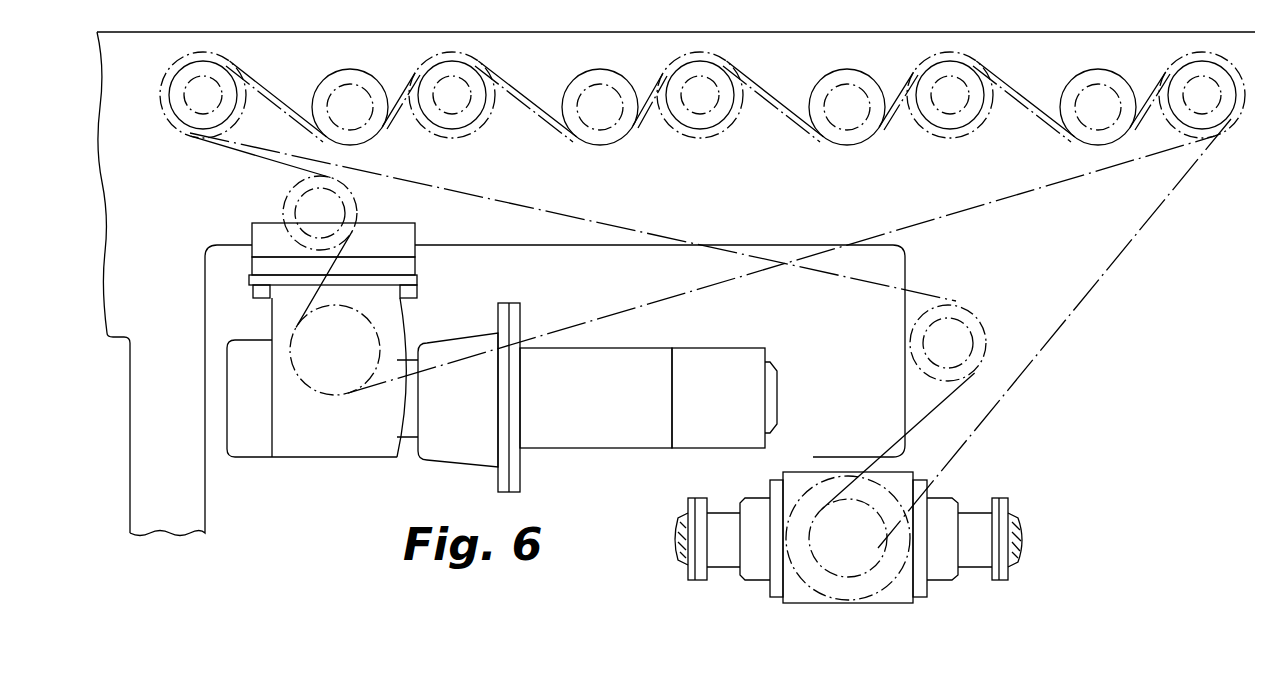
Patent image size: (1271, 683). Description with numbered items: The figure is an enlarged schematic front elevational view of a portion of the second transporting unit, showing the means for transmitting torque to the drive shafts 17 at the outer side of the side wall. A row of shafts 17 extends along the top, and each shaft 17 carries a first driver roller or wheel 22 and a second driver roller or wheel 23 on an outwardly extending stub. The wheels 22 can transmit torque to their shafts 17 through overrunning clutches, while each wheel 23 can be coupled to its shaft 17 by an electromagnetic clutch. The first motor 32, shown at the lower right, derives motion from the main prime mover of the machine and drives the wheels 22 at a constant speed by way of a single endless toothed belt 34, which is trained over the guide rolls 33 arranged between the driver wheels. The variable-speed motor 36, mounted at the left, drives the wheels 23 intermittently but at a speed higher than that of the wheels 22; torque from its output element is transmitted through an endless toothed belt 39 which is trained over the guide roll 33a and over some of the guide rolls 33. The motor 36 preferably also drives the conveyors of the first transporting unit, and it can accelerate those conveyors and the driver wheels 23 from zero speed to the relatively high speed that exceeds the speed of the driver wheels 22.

The drive shaft 17 is at (468, 104).
The first driver roller 22 is at (172, 110).
The second driver roller 23 is at (244, 109).
The first motor 32 is at (887, 587).
The guide roll 33 is at (333, 73).
The guide roll 33a is at (290, 189).
The endless toothed belt 34 is at (1135, 237).
The variable-speed motor 36 is at (472, 317).
The endless toothed belt 39 is at (1015, 198).